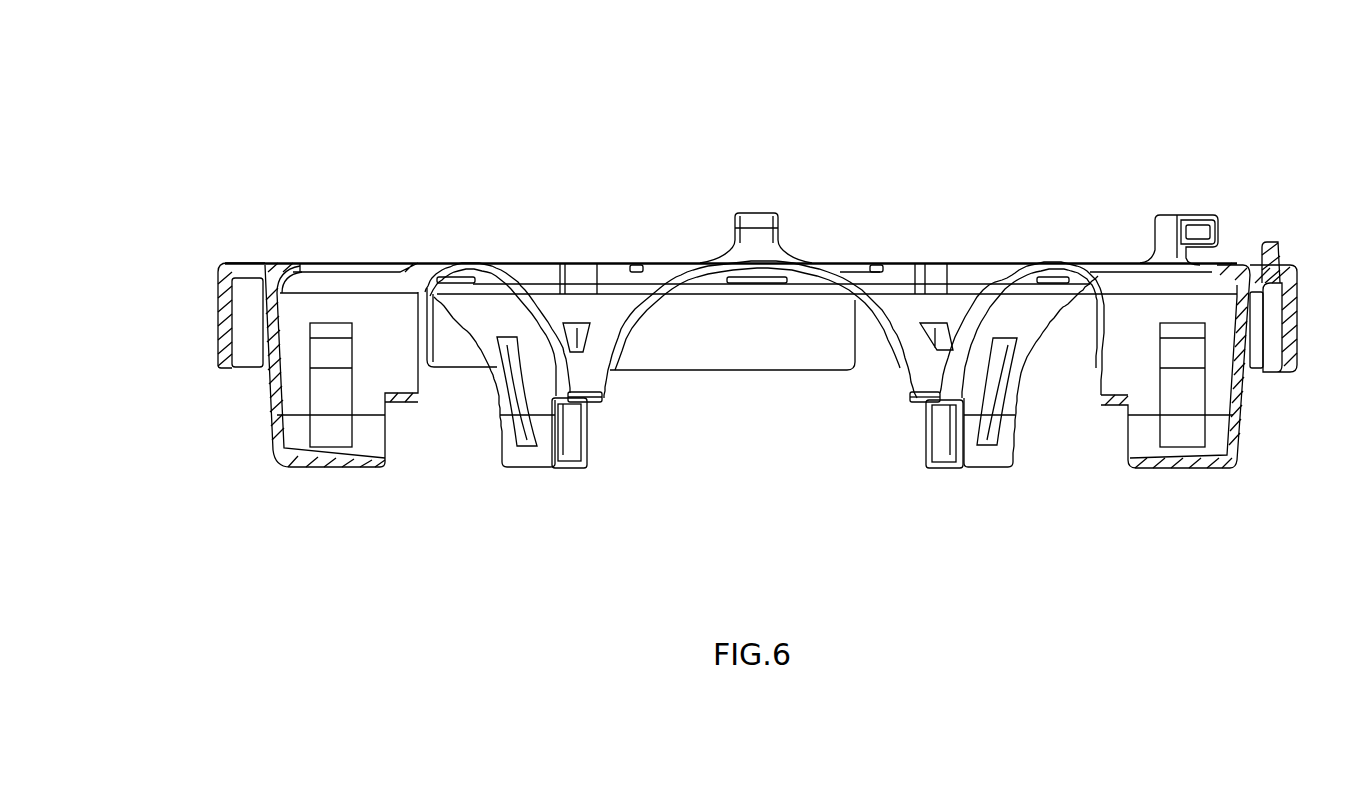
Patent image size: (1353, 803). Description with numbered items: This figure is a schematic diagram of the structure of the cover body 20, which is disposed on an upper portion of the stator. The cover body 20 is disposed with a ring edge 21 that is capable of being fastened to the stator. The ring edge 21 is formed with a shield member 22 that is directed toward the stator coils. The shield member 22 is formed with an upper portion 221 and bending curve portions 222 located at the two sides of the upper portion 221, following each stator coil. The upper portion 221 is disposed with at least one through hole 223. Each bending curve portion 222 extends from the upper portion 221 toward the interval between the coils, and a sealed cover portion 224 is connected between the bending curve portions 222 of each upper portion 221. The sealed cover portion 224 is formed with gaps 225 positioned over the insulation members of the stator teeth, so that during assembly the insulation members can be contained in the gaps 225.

The cover body 20 is at (1240, 87).
The ring edge 21 is at (215, 325).
The shield member 22 is at (987, 162).
The upper portion 221 is at (855, 283).
The bending curve portions 222 is at (493, 300).
The through hole 223 is at (510, 372).
The sealed cover portion 224 is at (525, 470).
The gaps 225 is at (593, 433).